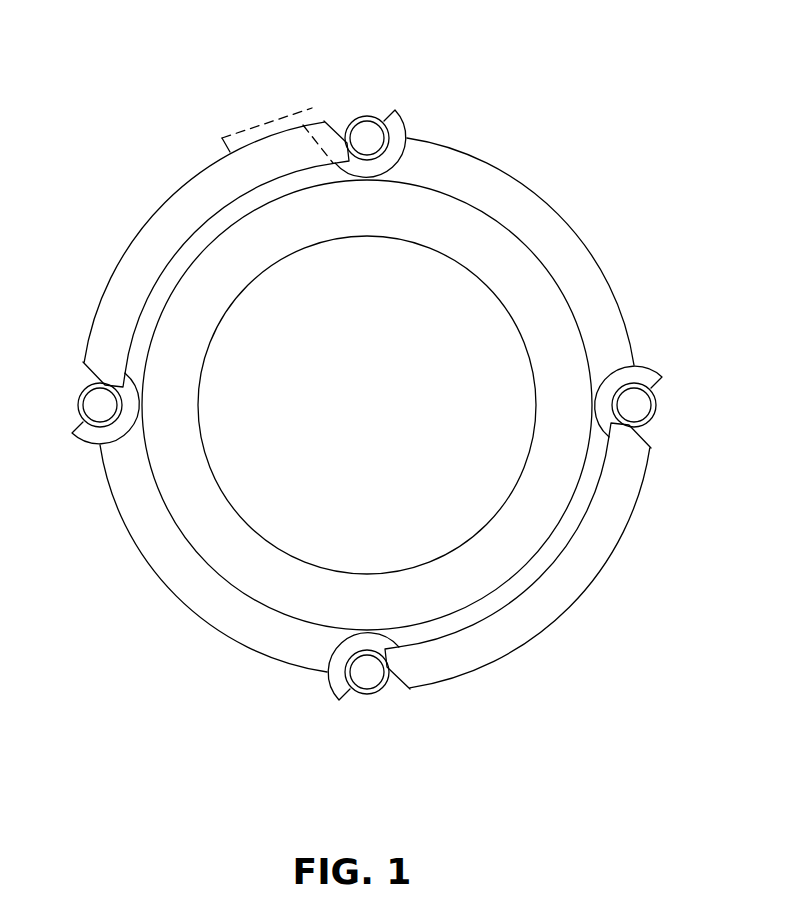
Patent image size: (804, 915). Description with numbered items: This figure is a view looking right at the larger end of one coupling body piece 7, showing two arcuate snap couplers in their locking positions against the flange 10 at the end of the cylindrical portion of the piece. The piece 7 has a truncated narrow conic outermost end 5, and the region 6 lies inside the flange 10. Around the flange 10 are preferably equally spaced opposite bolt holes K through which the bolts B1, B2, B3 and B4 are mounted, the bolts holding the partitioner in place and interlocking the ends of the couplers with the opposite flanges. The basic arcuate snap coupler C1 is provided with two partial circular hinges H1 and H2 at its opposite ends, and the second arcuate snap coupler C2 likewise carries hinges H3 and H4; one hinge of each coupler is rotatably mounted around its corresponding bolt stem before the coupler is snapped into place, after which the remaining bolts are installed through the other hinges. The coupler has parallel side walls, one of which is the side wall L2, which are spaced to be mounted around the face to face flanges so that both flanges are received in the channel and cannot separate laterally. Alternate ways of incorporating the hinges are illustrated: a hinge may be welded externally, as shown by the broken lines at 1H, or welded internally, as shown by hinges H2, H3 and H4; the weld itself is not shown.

The truncated narrow conic outermost end 5 is at (200, 368).
The base plate 6 is at (513, 265).
The coupling body piece 7 is at (278, 552).
The flange 10 is at (262, 197).
The externally welded hinge 1H is at (265, 118).
The arcuate snap coupler C1 is at (162, 198).
The second clamp segment C2 is at (582, 612).
The parallel side wall L2 is at (165, 240).
The bolt hole K is at (367, 116).
The bolt B1 is at (367, 138).
The bolt B2 is at (100, 405).
The bolt B3 is at (367, 672).
The bolt B4 is at (634, 405).
The partial circular hinge H1 is at (368, 180).
The partial circular hinge H2 is at (141, 407).
The internally welded hinge H3 is at (375, 630).
The internally welded hinge H4 is at (600, 387).